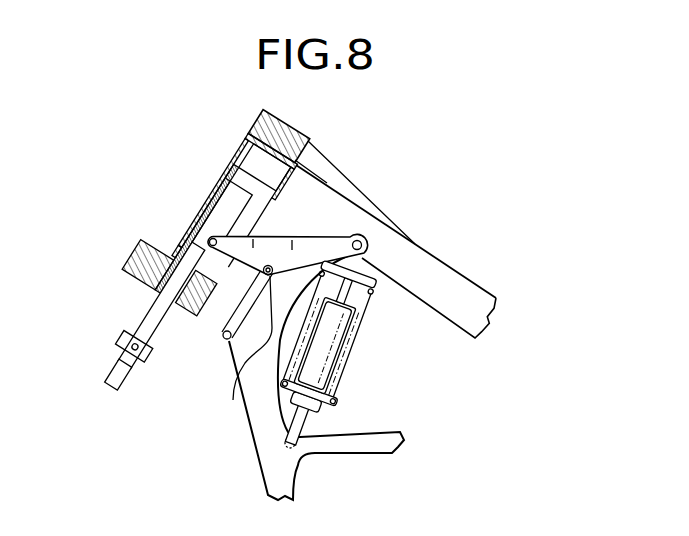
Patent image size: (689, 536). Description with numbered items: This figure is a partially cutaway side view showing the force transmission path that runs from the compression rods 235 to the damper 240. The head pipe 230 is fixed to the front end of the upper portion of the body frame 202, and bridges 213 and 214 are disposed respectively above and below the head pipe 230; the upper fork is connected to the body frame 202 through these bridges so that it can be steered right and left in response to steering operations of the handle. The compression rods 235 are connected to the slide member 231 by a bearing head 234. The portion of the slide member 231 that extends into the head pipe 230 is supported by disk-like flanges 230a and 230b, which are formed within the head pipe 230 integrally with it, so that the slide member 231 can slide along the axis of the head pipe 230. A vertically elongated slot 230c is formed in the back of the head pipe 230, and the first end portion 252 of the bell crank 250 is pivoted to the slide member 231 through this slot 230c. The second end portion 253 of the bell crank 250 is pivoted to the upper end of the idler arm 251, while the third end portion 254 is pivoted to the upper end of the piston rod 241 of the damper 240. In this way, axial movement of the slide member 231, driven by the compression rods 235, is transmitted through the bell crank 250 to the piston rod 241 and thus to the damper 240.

The body frame 202 is at (347, 428).
The bridge 213 is at (312, 137).
The bridge 214 is at (137, 273).
The head pipe 230 is at (205, 201).
The disk-like flange 230a is at (243, 170).
The disk-like flange 230b is at (166, 252).
The vertically elongated slot 230c is at (227, 274).
The slide member 231 is at (151, 320).
The bearing head 234 is at (148, 362).
The compression rods 235 is at (118, 375).
The damper 240 is at (368, 333).
The piston rod 241 is at (361, 261).
The bell crank 250 is at (300, 247).
The idler arm 251 is at (250, 354).
The first end portion 252 is at (211, 236).
The second end portion 253 is at (246, 376).
The third end portion 254 is at (358, 240).